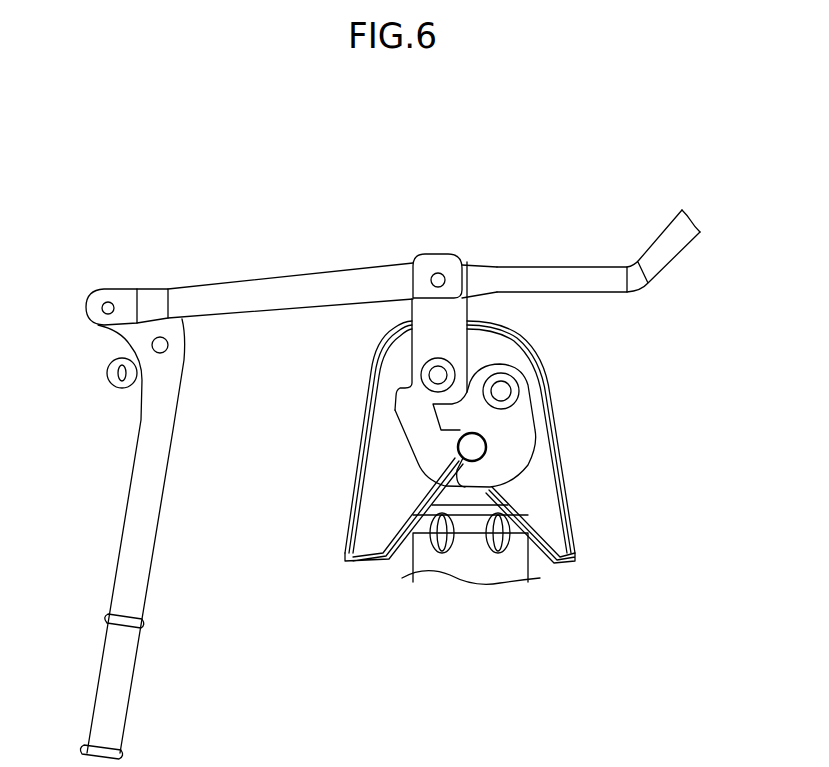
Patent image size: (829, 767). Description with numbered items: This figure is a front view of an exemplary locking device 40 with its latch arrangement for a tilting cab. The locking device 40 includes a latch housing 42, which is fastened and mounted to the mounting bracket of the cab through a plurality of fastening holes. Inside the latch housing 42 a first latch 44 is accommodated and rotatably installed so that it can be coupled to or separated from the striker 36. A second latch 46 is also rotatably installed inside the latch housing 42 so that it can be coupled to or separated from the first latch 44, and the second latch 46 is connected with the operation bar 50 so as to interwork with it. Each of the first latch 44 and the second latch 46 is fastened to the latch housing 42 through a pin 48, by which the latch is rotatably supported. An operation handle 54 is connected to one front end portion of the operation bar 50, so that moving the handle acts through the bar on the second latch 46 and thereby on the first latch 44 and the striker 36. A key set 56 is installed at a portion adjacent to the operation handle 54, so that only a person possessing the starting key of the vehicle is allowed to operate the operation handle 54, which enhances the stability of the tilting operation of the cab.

The striker 36 is at (472, 447).
The locking device 40 is at (624, 400).
The latch housing 42 is at (570, 497).
The first latch 44 is at (525, 412).
The second latch 46 is at (420, 313).
The pin 48 is at (438, 375).
The operation bar 50 is at (570, 272).
The operation handle 54 is at (133, 537).
The key set 56 is at (113, 383).